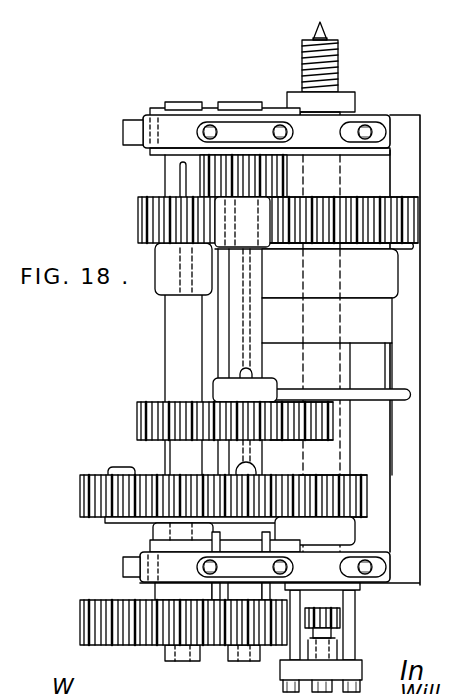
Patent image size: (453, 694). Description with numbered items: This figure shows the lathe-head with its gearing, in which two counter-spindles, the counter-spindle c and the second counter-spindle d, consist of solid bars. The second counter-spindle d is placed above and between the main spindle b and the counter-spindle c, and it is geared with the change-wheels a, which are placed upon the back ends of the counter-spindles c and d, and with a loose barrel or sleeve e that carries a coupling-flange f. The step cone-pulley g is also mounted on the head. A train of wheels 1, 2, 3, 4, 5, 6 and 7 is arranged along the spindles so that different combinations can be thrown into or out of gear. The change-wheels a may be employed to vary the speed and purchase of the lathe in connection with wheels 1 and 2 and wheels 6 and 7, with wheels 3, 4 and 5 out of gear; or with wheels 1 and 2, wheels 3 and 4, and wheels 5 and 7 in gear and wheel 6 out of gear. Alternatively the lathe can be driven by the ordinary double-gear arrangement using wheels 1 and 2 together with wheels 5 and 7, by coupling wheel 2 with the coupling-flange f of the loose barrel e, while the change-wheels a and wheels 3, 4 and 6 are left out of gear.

The wheel 1 is at (340, 497).
The wheel 2 is at (98, 495).
The wheel 3 is at (150, 420).
The wheel 4 is at (333, 422).
The wheel 5 is at (156, 222).
The wheel 6 is at (266, 180).
The wheel 7 is at (405, 222).
The change-wheels a is at (98, 622).
The main spindle b is at (321, 637).
The counter-spindle c is at (187, 650).
The second counter-spindle d is at (244, 662).
The loose barrel or sleeve e is at (219, 457).
The coupling-flange f is at (137, 520).
The cone-pulley g is at (330, 296).